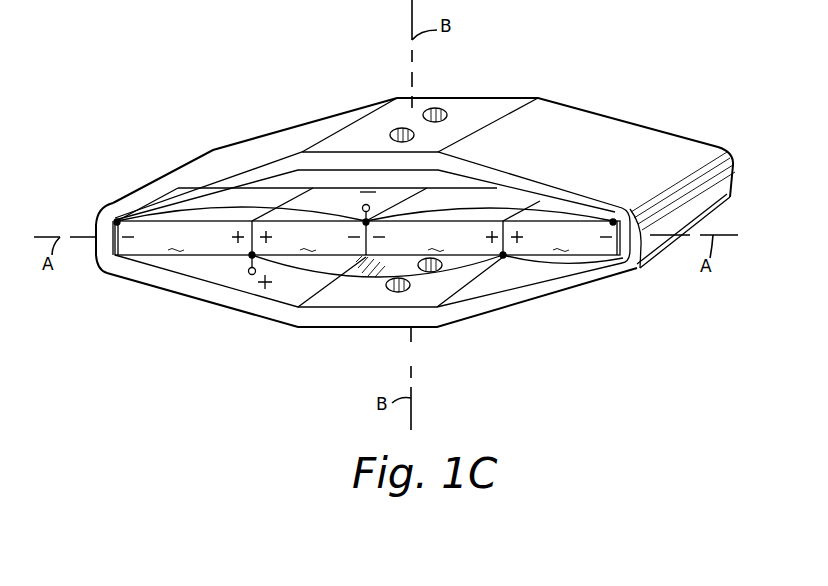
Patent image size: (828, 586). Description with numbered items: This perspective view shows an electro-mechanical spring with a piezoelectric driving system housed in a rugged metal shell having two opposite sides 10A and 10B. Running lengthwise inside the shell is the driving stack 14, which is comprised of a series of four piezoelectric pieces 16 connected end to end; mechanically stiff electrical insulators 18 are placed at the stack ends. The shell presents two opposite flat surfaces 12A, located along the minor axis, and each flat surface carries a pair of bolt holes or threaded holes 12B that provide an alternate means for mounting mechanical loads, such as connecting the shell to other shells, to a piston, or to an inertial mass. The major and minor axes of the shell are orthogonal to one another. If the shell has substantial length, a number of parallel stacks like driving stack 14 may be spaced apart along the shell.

The side of shell 10A is at (267, 139).
The side of shell 10B is at (200, 299).
The flat surface 12A is at (422, 103).
The bolt holes or threaded holes 12B is at (414, 137).
The driving stack 14 is at (494, 197).
The piezoelectric pieces 16 is at (366, 238).
The electrical insulators 18 is at (640, 258).